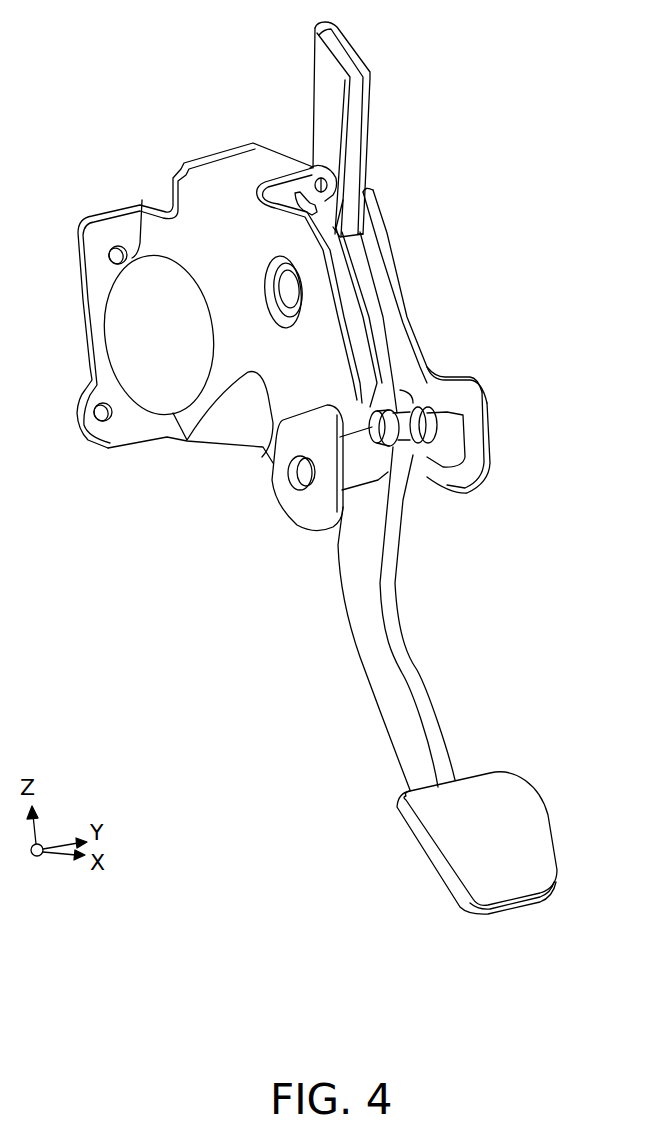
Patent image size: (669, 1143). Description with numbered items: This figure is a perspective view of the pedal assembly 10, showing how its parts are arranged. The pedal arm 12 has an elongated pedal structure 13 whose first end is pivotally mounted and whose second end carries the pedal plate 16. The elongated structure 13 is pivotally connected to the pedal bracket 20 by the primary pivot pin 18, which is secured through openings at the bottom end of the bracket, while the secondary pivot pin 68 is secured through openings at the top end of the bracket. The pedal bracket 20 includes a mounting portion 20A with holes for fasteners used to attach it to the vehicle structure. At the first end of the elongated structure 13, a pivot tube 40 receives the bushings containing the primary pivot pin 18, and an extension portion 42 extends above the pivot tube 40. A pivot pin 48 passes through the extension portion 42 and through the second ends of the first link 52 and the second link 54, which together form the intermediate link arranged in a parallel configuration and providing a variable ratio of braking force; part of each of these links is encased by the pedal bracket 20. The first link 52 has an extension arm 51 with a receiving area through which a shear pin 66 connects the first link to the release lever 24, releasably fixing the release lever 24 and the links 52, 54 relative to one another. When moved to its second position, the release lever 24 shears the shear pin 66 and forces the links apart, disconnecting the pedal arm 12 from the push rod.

The pedal assembly 10 is at (268, 624).
The pedal arm 12 is at (427, 687).
The elongated pedal structure 13 is at (390, 723).
The pedal plate 16 is at (533, 822).
The primary pivot pin 18 is at (298, 477).
The pedal bracket 20 is at (227, 430).
The mounting portion 20A is at (110, 231).
The release lever 24 is at (322, 70).
The pivot tube 40 is at (442, 460).
The extension portion 42 is at (417, 417).
The pivot pin 48 is at (375, 423).
The extension arm 51 is at (327, 210).
The first link 52 is at (370, 337).
The second link 54 is at (400, 347).
The shear pin 66 is at (312, 210).
The secondary pivot pin 68 is at (283, 288).